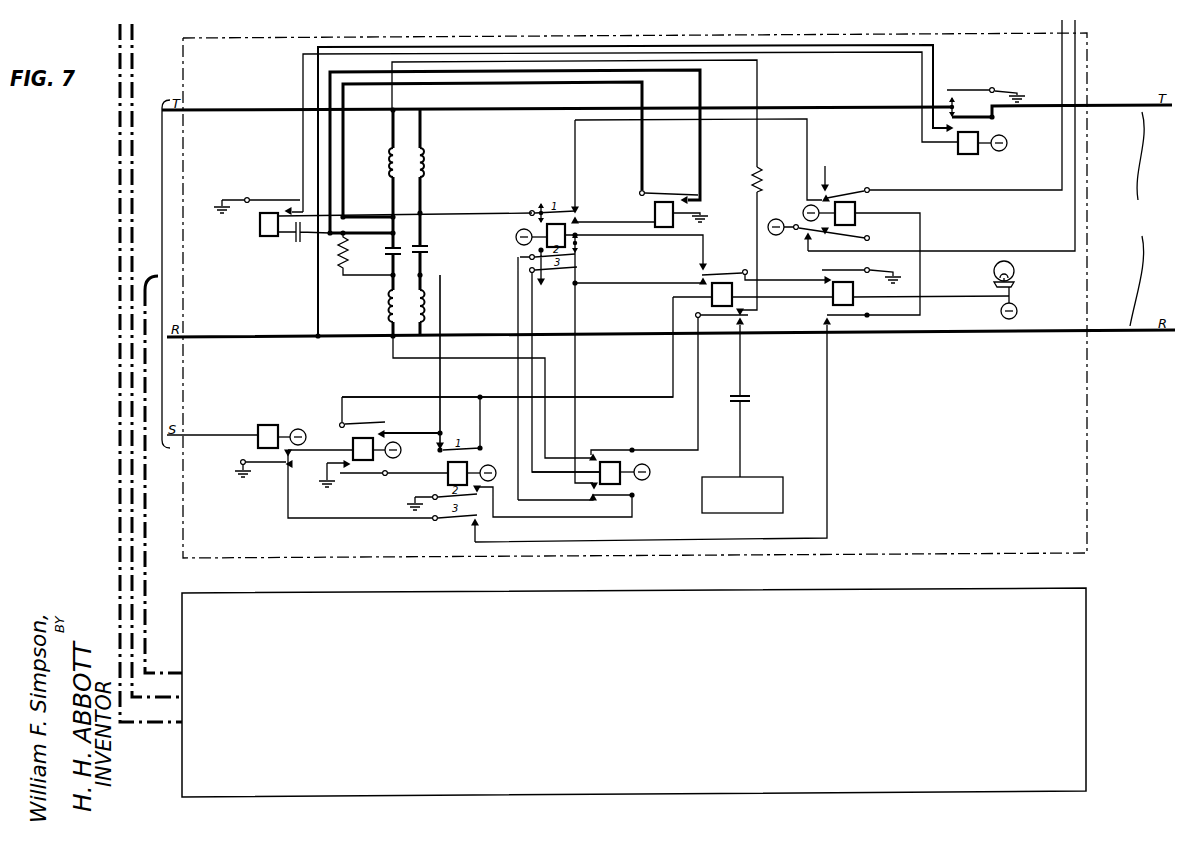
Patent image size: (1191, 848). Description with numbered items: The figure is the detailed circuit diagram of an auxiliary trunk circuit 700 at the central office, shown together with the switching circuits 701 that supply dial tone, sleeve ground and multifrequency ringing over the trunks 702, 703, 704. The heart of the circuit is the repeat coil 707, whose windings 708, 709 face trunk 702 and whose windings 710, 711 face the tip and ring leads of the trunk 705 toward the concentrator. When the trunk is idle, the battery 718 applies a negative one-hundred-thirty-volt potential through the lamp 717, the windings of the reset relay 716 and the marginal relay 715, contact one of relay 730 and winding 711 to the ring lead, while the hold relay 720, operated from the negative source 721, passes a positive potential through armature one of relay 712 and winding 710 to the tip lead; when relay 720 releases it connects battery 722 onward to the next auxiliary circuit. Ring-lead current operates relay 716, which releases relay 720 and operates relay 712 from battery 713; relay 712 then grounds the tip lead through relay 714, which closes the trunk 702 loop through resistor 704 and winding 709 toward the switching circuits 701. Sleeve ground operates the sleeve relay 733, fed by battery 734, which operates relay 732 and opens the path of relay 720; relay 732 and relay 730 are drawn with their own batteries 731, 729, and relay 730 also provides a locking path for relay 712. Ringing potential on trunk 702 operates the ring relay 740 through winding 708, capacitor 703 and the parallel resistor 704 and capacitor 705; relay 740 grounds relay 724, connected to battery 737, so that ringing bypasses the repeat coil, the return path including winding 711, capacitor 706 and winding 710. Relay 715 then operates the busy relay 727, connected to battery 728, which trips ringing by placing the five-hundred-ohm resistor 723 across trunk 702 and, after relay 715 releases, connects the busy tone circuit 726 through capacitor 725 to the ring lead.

The auxiliary trunk circuit 700 is at (635, 295).
The switching circuits 701 is at (634, 692).
The trunk 702 is at (147, 530).
The trunk / capacitor 703 is at (122, 560).
The trunk / resistor 704 is at (122, 589).
The trunk / capacitor 705 is at (388, 251).
The capacitor 706 is at (428, 251).
The repeat coil 707 is at (403, 214).
The winding 708 is at (389, 164).
The winding 709 is at (388, 312).
The winding 710 is at (425, 164).
The winding 711 is at (426, 304).
The relay 712 is at (546, 231).
The battery 713 is at (519, 243).
The relay 714 is at (655, 212).
The marginal relay 715 is at (712, 303).
The reset relay 716 is at (833, 302).
The indicating lamp 717 is at (1014, 270).
The battery 718 is at (1001, 311).
The hold relay 720 is at (857, 207).
The negative potential source 721 is at (806, 208).
The battery 722 is at (778, 235).
The resistor 723 is at (752, 183).
The relay 724 is at (966, 154).
The capacitor 725 is at (752, 399).
The busy tone circuit 726 is at (773, 477).
The busy relay 727 is at (622, 482).
The battery 728 is at (650, 470).
The battery 729 is at (489, 465).
The relay 730 is at (448, 482).
The battery 731 is at (400, 456).
The relay 732 is at (353, 441).
The sleeve relay 733 is at (268, 425).
The battery 734 is at (300, 429).
The battery 737 is at (1007, 141).
The ring relay 740 is at (260, 226).